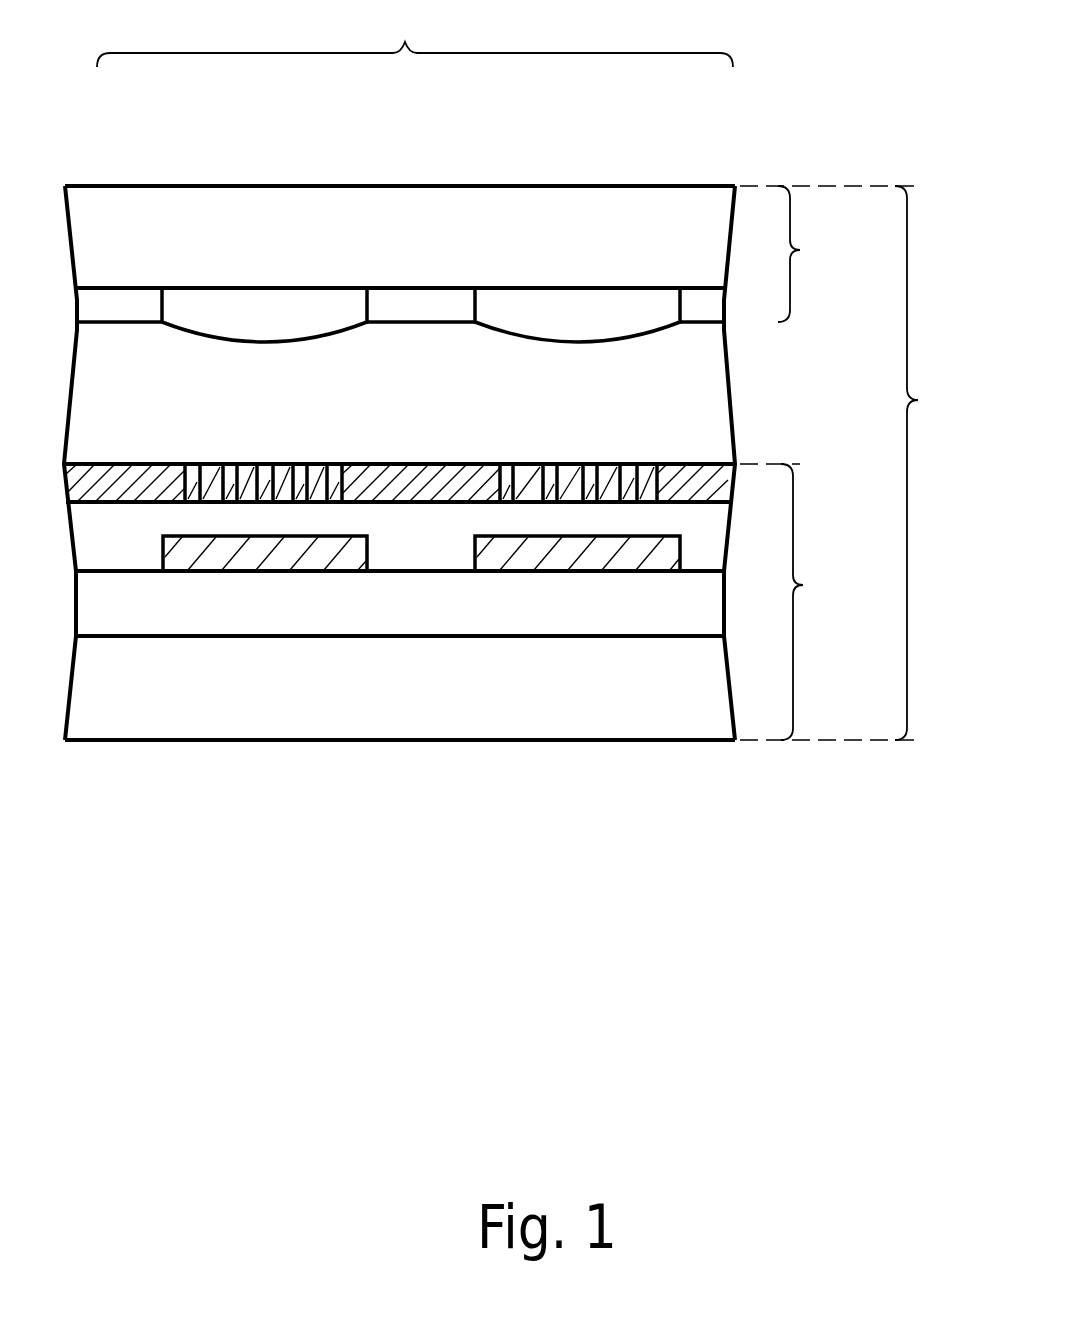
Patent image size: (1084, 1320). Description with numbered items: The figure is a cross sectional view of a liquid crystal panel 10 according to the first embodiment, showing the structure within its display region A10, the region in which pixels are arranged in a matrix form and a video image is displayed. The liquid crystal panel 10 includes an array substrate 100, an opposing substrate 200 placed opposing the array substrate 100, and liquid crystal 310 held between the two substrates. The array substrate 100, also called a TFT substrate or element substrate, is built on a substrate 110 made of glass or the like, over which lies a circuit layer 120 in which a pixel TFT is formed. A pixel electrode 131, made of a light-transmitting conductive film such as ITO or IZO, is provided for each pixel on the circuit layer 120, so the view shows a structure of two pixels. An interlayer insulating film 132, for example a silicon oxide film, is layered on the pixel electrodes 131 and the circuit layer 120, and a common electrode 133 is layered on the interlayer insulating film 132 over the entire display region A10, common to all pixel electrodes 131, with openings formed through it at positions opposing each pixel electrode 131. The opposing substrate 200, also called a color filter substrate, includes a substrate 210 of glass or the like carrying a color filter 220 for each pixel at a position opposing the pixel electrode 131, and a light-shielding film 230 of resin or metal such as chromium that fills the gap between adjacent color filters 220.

The liquid crystal panel 10 is at (517, 463).
The display region A10 is at (415, 34).
The array substrate 100 is at (808, 602).
The substrate 110 is at (110, 722).
The circuit layer 120 is at (195, 615).
The pixel electrode 131 is at (265, 552).
The interlayer insulating film 132 is at (400, 528).
The common electrode 133 is at (430, 483).
The opposing substrate 200 is at (825, 254).
The substrate 210 is at (132, 238).
The color filter 220 is at (265, 313).
The light-shielding film 230 is at (418, 313).
The liquid crystal 310 is at (685, 400).